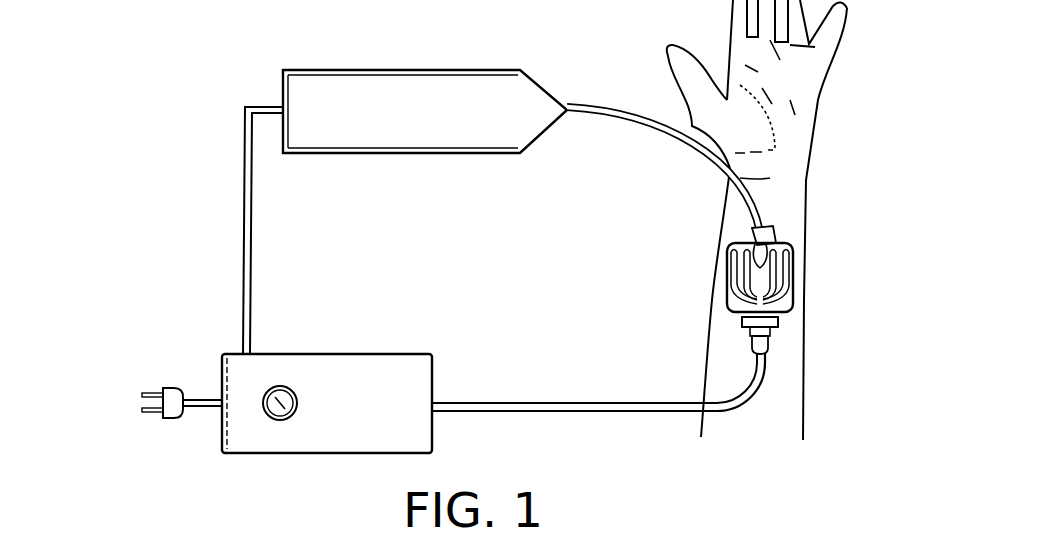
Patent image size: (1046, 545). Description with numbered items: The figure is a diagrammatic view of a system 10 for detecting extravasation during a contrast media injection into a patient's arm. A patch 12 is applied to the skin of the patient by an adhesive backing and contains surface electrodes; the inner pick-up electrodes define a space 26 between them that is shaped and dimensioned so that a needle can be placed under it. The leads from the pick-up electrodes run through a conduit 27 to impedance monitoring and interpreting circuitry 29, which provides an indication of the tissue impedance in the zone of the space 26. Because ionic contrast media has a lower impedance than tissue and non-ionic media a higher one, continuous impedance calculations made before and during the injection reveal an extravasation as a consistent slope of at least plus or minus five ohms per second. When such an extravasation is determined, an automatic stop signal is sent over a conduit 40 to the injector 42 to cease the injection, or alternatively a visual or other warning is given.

The glucose monitoring system 10 is at (676, 455).
The patch 12 is at (788, 277).
The space 26 is at (728, 296).
The conduit 27 is at (577, 405).
The impedance monitoring and interpreting circuitry 29 is at (248, 453).
The conduit 40 is at (253, 252).
The injector 42 is at (405, 68).